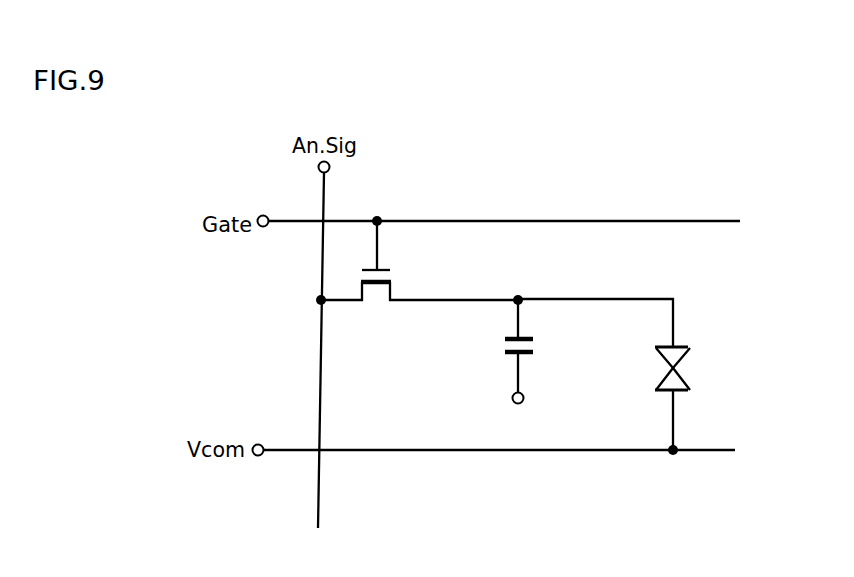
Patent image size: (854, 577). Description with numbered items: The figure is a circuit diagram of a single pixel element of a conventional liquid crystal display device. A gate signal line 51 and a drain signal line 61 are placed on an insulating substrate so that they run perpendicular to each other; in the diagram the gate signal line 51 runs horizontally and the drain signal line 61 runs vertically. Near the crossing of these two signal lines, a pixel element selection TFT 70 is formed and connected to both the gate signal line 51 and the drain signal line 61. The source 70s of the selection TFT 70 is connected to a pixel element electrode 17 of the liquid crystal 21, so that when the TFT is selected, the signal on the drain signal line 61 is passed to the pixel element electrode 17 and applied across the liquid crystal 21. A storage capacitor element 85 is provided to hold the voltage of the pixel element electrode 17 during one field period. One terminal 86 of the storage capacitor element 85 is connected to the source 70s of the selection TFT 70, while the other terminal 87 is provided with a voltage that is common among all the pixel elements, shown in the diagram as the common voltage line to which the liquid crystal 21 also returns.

The gate signal line 51 is at (446, 221).
The drain signal line 61 is at (323, 190).
The pixel element selection TFT 70 is at (373, 303).
The source 70s is at (407, 296).
The storage capacitor element 85 is at (538, 346).
The terminal 86 is at (525, 316).
The terminal 87 is at (526, 400).
The pixel element electrode 17 is at (677, 340).
The liquid crystal 21 is at (680, 368).